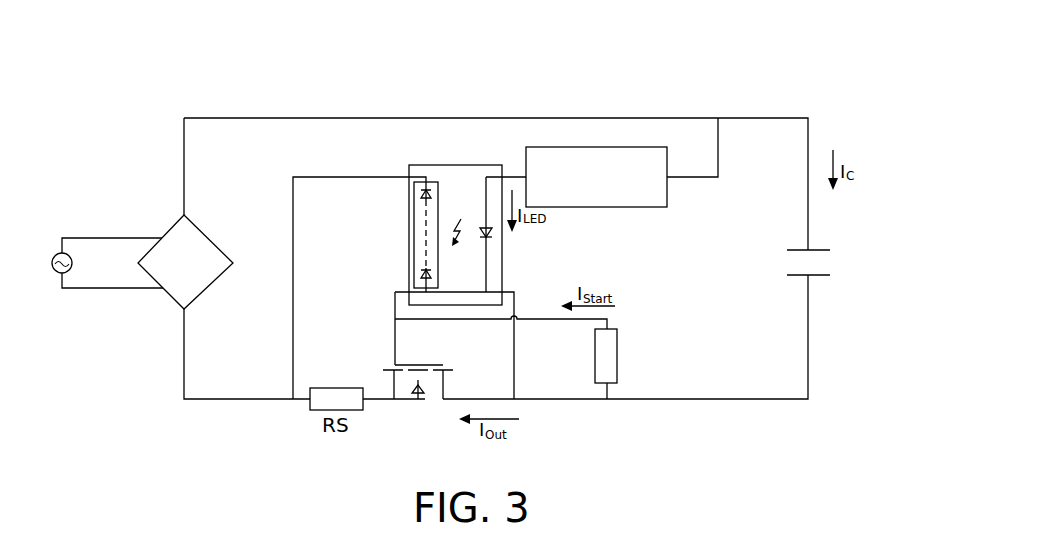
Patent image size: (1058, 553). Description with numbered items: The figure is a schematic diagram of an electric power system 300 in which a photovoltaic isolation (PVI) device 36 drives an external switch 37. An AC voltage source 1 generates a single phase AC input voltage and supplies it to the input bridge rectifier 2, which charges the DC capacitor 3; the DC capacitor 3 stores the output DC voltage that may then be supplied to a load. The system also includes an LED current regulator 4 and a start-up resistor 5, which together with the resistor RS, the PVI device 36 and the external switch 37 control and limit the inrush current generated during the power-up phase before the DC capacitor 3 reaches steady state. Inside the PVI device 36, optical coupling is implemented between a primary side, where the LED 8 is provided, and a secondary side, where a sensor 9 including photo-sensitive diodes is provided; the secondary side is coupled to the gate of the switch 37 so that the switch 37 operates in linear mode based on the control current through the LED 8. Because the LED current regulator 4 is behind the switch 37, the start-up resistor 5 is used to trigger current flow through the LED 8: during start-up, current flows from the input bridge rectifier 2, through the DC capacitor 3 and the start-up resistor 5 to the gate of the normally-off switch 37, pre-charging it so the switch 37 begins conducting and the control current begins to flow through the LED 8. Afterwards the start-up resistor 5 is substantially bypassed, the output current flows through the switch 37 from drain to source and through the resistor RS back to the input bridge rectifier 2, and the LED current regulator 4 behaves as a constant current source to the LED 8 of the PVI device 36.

The electric power system 300 is at (737, 55).
The AC voltage source 1 is at (60, 252).
The input bridge rectifier 2 is at (162, 237).
The DC capacitor 3 is at (793, 277).
The LED current regulator 4 is at (667, 192).
The start-up resistor 5 is at (617, 358).
The LED 8 is at (490, 235).
The sensor 9 is at (433, 177).
The photovoltaic isolation (PVI) device 36 is at (468, 165).
The external switch 37 is at (403, 400).